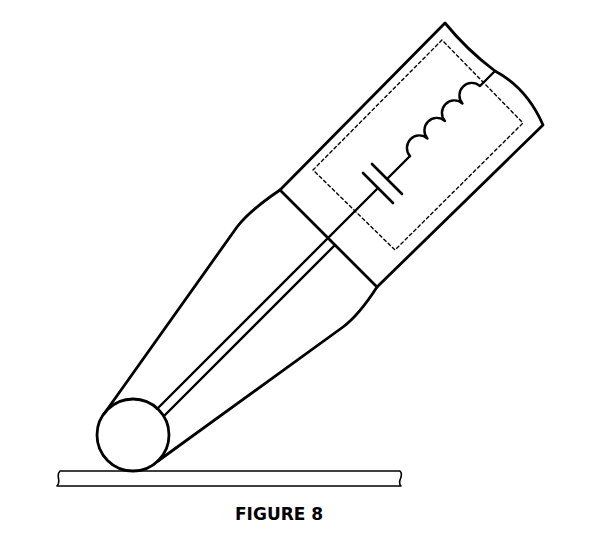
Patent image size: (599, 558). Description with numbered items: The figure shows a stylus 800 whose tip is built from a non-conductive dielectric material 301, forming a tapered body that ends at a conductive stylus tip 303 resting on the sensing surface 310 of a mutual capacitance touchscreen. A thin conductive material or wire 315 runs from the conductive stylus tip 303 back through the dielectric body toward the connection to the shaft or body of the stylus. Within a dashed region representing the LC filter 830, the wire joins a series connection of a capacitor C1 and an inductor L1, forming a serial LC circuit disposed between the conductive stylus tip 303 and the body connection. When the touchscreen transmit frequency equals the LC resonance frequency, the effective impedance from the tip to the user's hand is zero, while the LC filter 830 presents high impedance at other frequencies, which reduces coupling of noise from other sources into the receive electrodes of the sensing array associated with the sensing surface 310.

The stylus 800 is at (110, 109).
The sensing surface 310 is at (416, 250).
The non-conductive dielectric material 301 is at (205, 284).
The conductive stylus tip 303 is at (100, 435).
The thin conductive material or wire 315 is at (250, 330).
The LC filter 830 is at (427, 145).
The capacitor C1 is at (386, 194).
The inductor L1 is at (451, 113).